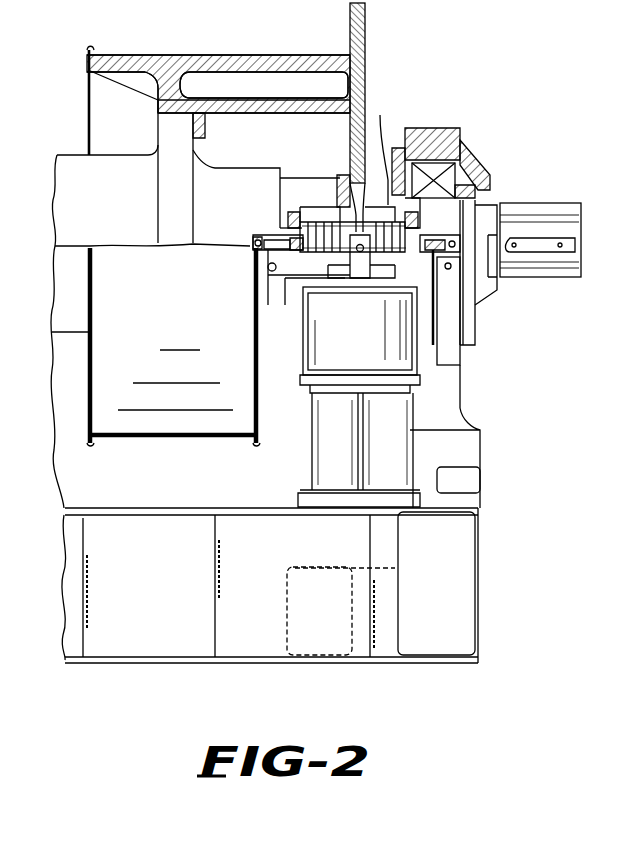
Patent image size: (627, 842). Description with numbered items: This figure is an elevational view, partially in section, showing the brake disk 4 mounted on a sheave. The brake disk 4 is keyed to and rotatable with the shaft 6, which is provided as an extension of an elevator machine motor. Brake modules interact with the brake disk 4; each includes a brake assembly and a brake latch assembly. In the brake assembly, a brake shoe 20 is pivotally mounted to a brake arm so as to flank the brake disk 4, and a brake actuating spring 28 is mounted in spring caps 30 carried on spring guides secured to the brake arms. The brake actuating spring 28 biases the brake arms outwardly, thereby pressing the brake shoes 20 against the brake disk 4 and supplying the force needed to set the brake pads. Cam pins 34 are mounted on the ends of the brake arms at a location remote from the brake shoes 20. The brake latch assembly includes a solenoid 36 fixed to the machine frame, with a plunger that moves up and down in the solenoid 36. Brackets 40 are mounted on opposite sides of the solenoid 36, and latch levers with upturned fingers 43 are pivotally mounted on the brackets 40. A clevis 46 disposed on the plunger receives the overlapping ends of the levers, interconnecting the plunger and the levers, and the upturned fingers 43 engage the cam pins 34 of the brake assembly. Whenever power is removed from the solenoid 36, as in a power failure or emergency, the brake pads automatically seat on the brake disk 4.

The brake disk 4 is at (366, 32).
The shaft 6 is at (569, 201).
The brake shoe 20 is at (362, 110).
The brake actuating spring 28 is at (336, 210).
The spring cap 30 is at (308, 212).
The cam pin 34 is at (270, 236).
The solenoid 36 is at (370, 344).
The bracket 40 is at (252, 356).
The upturned finger 43 is at (255, 244).
The clevis 46 is at (350, 257).